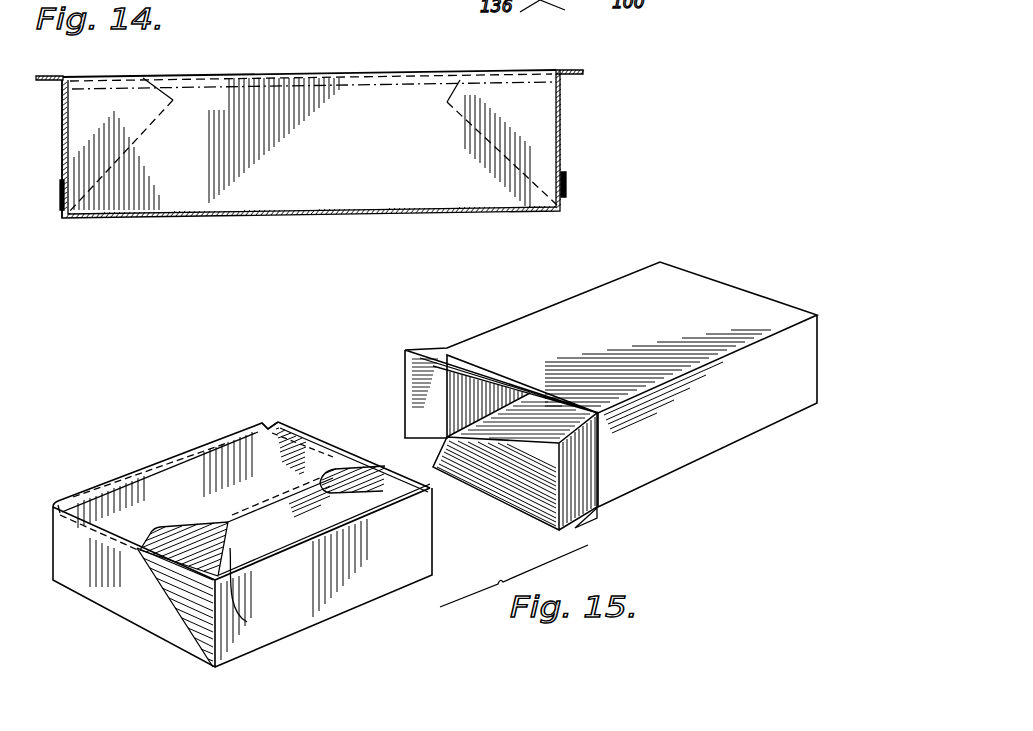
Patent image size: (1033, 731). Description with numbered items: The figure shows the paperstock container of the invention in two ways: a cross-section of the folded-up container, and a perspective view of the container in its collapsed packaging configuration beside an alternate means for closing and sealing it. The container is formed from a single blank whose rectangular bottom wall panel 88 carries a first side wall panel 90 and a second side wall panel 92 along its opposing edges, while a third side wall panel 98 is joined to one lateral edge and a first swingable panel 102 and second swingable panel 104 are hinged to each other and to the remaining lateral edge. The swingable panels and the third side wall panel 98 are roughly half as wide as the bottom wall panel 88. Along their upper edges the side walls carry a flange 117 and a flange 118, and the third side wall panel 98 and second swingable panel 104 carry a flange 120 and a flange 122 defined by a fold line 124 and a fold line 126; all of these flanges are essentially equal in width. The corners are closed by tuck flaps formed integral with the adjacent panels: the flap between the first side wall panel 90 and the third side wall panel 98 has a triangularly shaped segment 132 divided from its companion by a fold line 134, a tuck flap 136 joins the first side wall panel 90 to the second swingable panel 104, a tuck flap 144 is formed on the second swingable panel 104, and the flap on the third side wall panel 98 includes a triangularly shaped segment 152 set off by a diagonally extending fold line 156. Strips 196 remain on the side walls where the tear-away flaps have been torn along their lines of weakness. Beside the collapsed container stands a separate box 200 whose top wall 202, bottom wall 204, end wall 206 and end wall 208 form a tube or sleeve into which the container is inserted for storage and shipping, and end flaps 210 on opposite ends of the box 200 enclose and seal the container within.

In FIG. 14, the bottom wall panel 88 is at (332, 216).
In FIG. 14, the first side wall panel 90 is at (562, 138).
In FIG. 14, the second side wall panel 92 is at (66, 135).
In FIG. 15, the second side wall panel 92 is at (127, 603).
In FIG. 14, the third side wall panel 98 is at (372, 163).
In FIG. 15, the third side wall panel 98 is at (190, 496).
In FIG. 15, the first swingable panel 102 is at (298, 598).
In FIG. 15, the second swingable panel 104 is at (356, 519).
In FIG. 14, the flange 117 is at (578, 70).
In FIG. 15, the flange 117 is at (280, 423).
In FIG. 14, the flange 118 is at (42, 77).
In FIG. 15, the flange 118 is at (78, 530).
In FIG. 14, the flange 120 is at (385, 72).
In FIG. 15, the flange 120 is at (164, 455).
In FIG. 15, the flange 122 is at (190, 518).
In FIG. 15, the fold line 124 is at (203, 457).
In FIG. 15, the fold line 126 is at (262, 504).
In FIG. 14, the triangularly shaped segment 132 is at (543, 102).
In FIG. 14, the fold line 134 is at (473, 148).
In FIG. 15, the tuck flap 136 is at (375, 475).
In FIG. 15, the tuck flap 144 is at (254, 590).
In FIG. 14, the triangularly shaped segment 152 is at (140, 126).
In FIG. 14, the fold line 156 is at (125, 163).
In FIG. 14, the strips 196 is at (567, 186).
In FIG. 15, the box 200 is at (759, 284).
In FIG. 15, the top wall 202 is at (670, 313).
In FIG. 15, the bottom wall 204 is at (530, 433).
In FIG. 15, the end wall 206 is at (477, 390).
In FIG. 15, the end wall 208 is at (722, 428).
In FIG. 15, the end flaps 210 is at (570, 507).